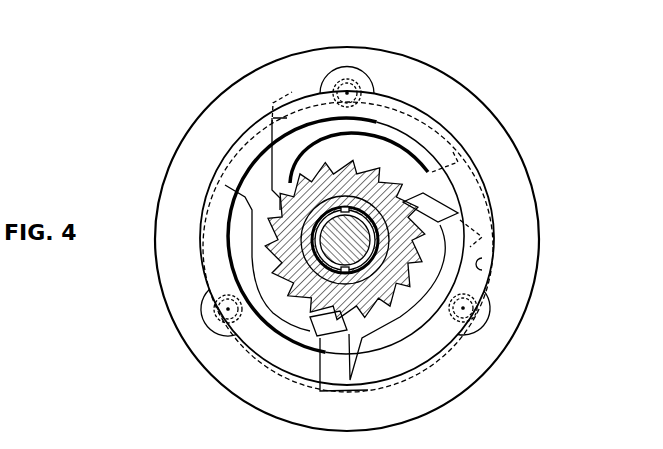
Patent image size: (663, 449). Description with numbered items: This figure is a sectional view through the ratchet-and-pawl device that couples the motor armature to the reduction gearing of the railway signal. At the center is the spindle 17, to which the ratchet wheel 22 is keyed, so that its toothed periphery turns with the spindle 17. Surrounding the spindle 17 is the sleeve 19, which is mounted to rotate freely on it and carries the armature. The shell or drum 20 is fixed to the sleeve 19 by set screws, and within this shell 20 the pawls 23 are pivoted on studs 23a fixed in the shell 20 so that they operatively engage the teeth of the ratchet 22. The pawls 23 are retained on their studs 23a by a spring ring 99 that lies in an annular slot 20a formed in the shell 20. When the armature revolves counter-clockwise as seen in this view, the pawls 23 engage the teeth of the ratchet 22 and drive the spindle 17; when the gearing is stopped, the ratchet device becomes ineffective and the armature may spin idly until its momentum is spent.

The shell or drum 20 is at (475, 119).
The annular slot 20a is at (488, 271).
The spring ring 99 is at (485, 175).
The studs 23a is at (347, 88).
The pawls 23 is at (442, 204).
The ratchet wheel 22 is at (345, 230).
The sleeve 19 is at (304, 237).
The spindle 17 is at (345, 239).